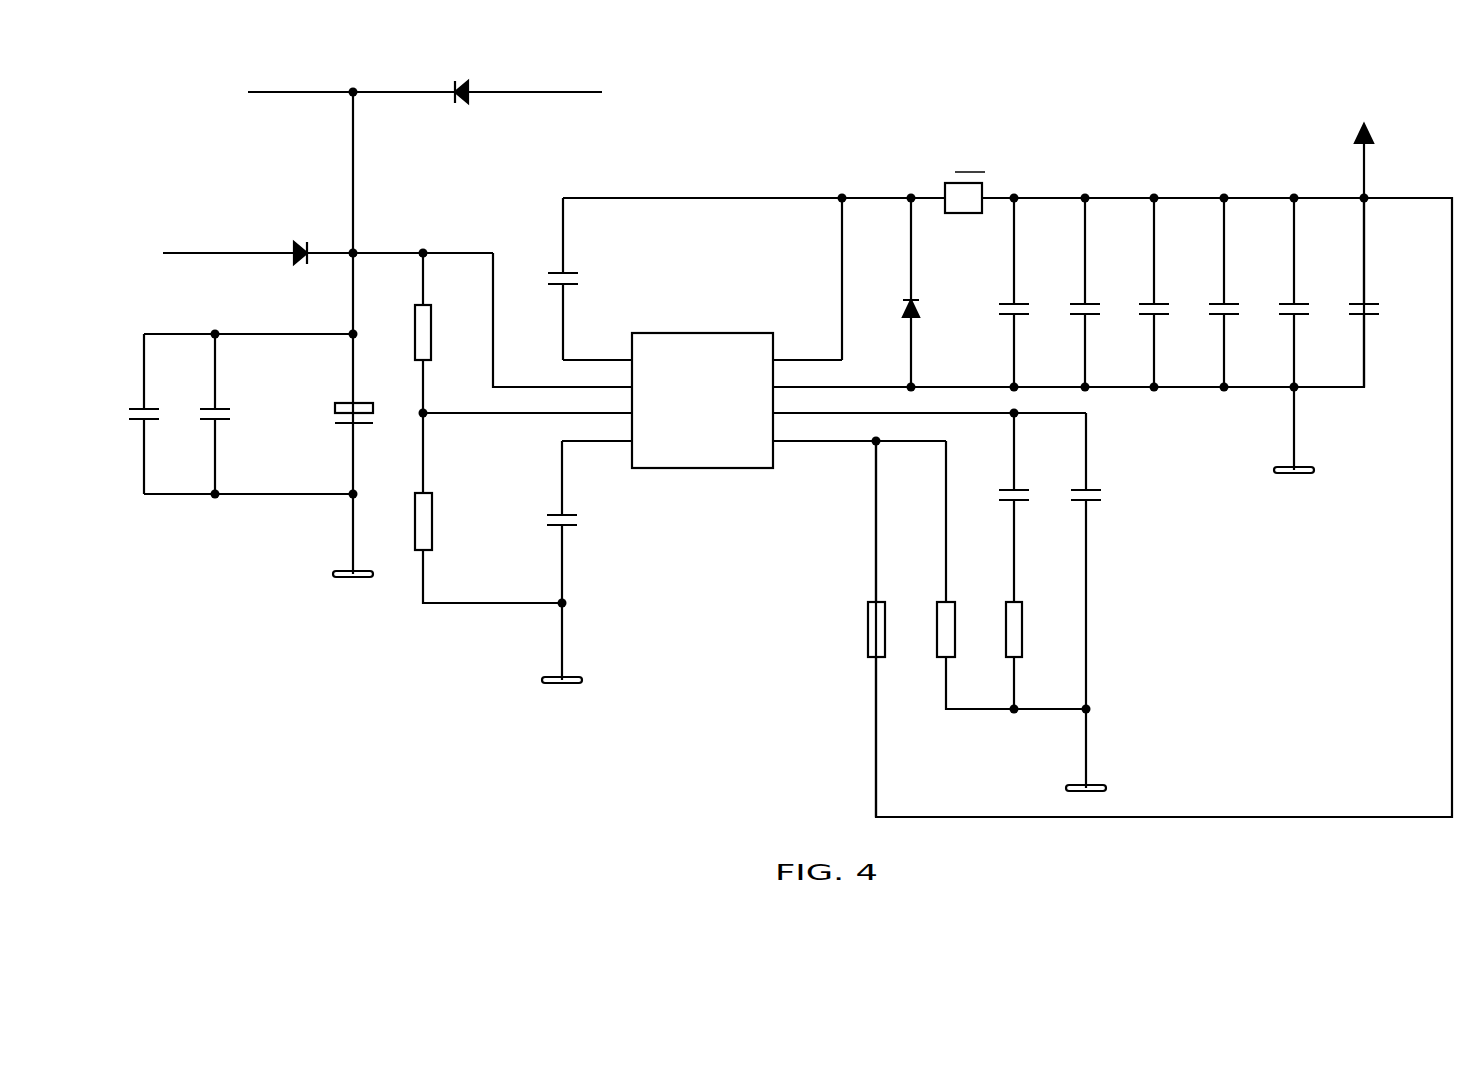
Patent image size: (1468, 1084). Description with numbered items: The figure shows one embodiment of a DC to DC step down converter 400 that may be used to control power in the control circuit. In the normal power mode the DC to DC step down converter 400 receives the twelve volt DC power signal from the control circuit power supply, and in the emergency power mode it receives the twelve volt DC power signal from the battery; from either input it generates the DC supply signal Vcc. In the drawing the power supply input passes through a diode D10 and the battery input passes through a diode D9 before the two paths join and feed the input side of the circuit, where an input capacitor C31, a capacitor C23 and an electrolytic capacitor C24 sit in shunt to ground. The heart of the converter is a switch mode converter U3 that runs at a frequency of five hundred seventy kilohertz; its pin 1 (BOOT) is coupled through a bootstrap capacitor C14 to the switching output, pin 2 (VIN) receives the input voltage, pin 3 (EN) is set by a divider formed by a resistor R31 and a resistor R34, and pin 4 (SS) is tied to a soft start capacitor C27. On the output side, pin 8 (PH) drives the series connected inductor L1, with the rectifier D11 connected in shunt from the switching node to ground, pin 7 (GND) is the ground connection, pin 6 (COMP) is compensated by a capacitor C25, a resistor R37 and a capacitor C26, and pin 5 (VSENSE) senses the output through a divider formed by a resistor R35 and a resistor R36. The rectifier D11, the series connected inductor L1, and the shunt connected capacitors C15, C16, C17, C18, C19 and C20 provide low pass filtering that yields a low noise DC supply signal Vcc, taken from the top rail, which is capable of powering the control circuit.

The DC to DC step down converter 400 is at (185, 118).
The diode US1J D9 is at (445, 94).
The diode US1J D10 is at (304, 251).
The rectifier D11 is at (882, 292).
The switch mode converter U3 is at (701, 364).
The series connected inductor L1 is at (970, 197).
The bootstrap capacitor 100NF C14 is at (593, 279).
The shunt connected capacitor C15 is at (970, 292).
The shunt connected capacitor C20 is at (1086, 292).
The shunt connected capacitor C16 is at (1184, 292).
The shunt connected capacitor C17 is at (1253, 292).
The shunt connected capacitor C18 is at (1324, 292).
The shunt connected capacitor C19 is at (1396, 292).
The input capacitor 100NF C23 is at (189, 414).
The electrolytic capacitor 220/25V C24 is at (313, 438).
The compensation capacitor 1.8NF C25 is at (1040, 507).
The compensation capacitor 47PF C26 is at (1109, 496).
The soft-start capacitor 15NF C27 is at (585, 562).
The input capacitor 22UF C31 is at (120, 414).
The enable resistor 470K R31 is at (451, 341).
The enable resistor 56K R34 is at (449, 529).
The feedback resistor 10K R35 is at (902, 629).
The feedback resistor 1.91K R36 is at (976, 631).
The compensation resistor 22K R37 is at (1039, 639).
The BOOT pin 1 is at (597, 346).
The VIN pin 2 is at (597, 373).
The EN pin 3 is at (597, 400).
The SS pin 4 is at (597, 427).
The VSENSE pin 5 is at (859, 427).
The COMP pin 6 is at (929, 400).
The GND pin 7 is at (842, 373).
The PH pin 8 is at (807, 346).